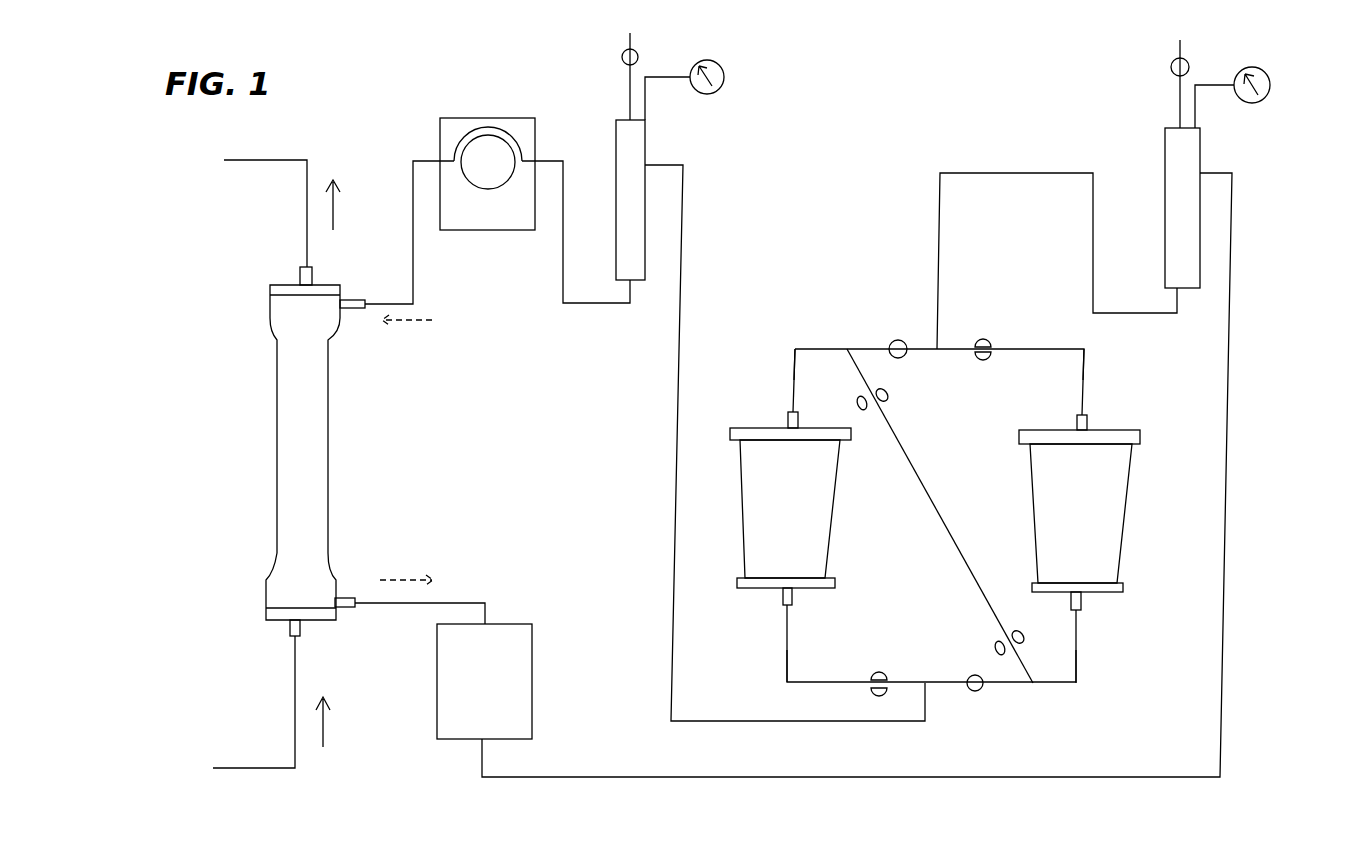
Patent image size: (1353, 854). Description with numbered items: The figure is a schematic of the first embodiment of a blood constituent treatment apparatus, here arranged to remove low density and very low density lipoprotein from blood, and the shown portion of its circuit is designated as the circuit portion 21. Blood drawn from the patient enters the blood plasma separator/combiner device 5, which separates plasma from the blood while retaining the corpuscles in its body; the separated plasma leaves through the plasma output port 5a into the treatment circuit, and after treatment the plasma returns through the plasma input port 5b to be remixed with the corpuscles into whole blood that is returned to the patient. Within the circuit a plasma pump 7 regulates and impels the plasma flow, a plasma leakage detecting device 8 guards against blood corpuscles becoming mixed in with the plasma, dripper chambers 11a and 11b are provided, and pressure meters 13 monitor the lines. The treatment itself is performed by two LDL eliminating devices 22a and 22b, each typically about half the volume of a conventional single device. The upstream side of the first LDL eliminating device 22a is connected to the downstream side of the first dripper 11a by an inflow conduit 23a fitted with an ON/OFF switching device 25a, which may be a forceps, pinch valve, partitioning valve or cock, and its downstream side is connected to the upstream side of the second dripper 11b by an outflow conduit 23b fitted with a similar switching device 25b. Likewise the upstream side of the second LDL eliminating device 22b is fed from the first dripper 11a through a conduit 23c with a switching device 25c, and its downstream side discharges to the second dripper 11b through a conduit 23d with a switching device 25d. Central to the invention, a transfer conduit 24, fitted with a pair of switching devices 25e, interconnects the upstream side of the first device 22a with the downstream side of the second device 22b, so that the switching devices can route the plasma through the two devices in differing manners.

The blood plasma separator/combiner device 5 is at (280, 482).
The plasma output port 5a is at (352, 590).
The plasma input port 5b is at (372, 310).
The plasma pump 7 is at (485, 118).
The plasma leakage detecting device 8 is at (518, 712).
The first dripper chamber 11a is at (1176, 247).
The second dripper chamber 11b is at (624, 246).
The pressure meter 13 is at (724, 90).
The circuit portion 21 is at (526, 465).
The first LDL eliminating device 22a is at (818, 512).
The second LDL eliminating device 22b is at (1112, 525).
The inflow conduit 23a is at (790, 368).
The outflow conduit 23b is at (786, 666).
The conduit 23c is at (1038, 349).
The conduit 23d is at (1077, 662).
The transfer conduit 24 is at (928, 500).
The ON/OFF switching device 25a is at (898, 340).
The ON/OFF switching device 25b is at (880, 670).
The ON/OFF switching device 25c is at (982, 362).
The ON/OFF switching device 25d is at (977, 692).
The ON/OFF switching devices 25e is at (865, 414).